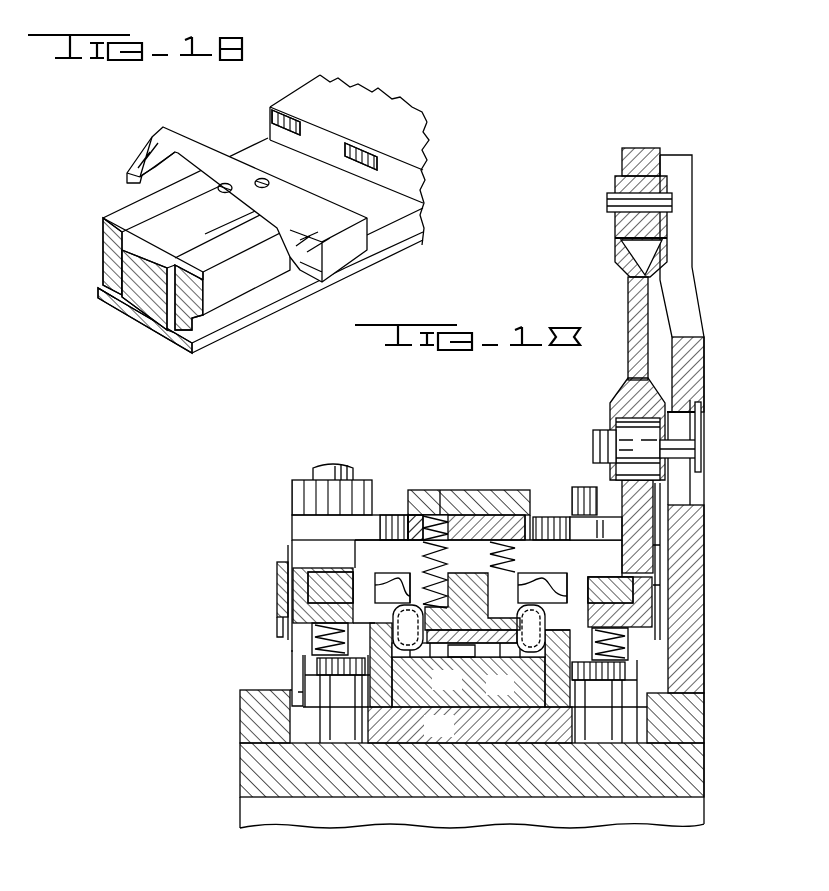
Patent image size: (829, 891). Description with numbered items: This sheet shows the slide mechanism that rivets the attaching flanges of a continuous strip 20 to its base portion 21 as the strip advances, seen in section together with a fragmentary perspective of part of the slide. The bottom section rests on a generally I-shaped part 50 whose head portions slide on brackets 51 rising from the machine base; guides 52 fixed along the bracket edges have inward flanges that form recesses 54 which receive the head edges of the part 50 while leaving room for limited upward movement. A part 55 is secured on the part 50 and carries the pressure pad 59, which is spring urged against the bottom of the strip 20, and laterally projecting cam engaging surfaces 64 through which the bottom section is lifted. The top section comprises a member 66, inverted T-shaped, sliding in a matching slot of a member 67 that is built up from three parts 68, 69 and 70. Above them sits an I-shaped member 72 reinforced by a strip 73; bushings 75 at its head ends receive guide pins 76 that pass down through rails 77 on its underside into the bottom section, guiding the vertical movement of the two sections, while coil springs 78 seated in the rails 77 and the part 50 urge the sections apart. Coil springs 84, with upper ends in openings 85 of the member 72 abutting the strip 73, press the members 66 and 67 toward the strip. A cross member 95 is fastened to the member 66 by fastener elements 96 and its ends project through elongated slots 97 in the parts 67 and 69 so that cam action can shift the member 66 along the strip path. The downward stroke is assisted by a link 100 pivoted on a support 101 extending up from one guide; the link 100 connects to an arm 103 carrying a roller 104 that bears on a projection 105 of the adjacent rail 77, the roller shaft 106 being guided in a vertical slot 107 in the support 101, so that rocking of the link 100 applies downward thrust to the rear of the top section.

In FIG. 18, the strip 20 is at (531, 628).
In FIG. 18, the base portion 21 is at (470, 665).
In FIG. 18, the I-shaped part 50 is at (452, 736).
In FIG. 18, the bracket 51 is at (255, 807).
In FIG. 18, the guide 52 is at (256, 700).
In FIG. 18, the recess 54 is at (294, 692).
In FIG. 18, the part 55 is at (513, 695).
In FIG. 18, the pressure pad 59 is at (458, 657).
In FIG. 18, the cam engaging surface 64 is at (475, 699).
In FIG. 19, the member 66 is at (143, 312).
In FIG. 18, the member 66 is at (472, 567).
In FIG. 19, the member 67 is at (233, 277).
In FIG. 18, the member 67 is at (513, 585).
In FIG. 19, the part 68 is at (193, 355).
In FIG. 18, the part 68 is at (408, 627).
In FIG. 19, the part 69 is at (101, 236).
In FIG. 19, the part 70 is at (253, 264).
In FIG. 18, the member 72 is at (537, 518).
In FIG. 18, the strip 73 is at (486, 500).
In FIG. 18, the bushing 75 is at (372, 502).
In FIG. 18, the guide pin 76 is at (326, 467).
In FIG. 18, the rail 77 is at (320, 576).
In FIG. 18, the coil spring 78 is at (318, 640).
In FIG. 18, the coil spring 84 is at (430, 550).
In FIG. 18, the opening 85 is at (438, 515).
In FIG. 19, the cross member 95 is at (185, 142).
In FIG. 18, the cross member 95 is at (380, 590).
In FIG. 19, the fastener element 96 is at (262, 188).
In FIG. 19, the elongated slot 97 is at (275, 117).
In FIG. 18, the link 100 is at (615, 240).
In FIG. 18, the support 101 is at (700, 546).
In FIG. 18, the arm 103 is at (630, 296).
In FIG. 18, the roller 104 is at (628, 433).
In FIG. 18, the projection 105 is at (604, 480).
In FIG. 18, the shaft 106 is at (688, 459).
In FIG. 18, the vertical slot 107 is at (690, 436).